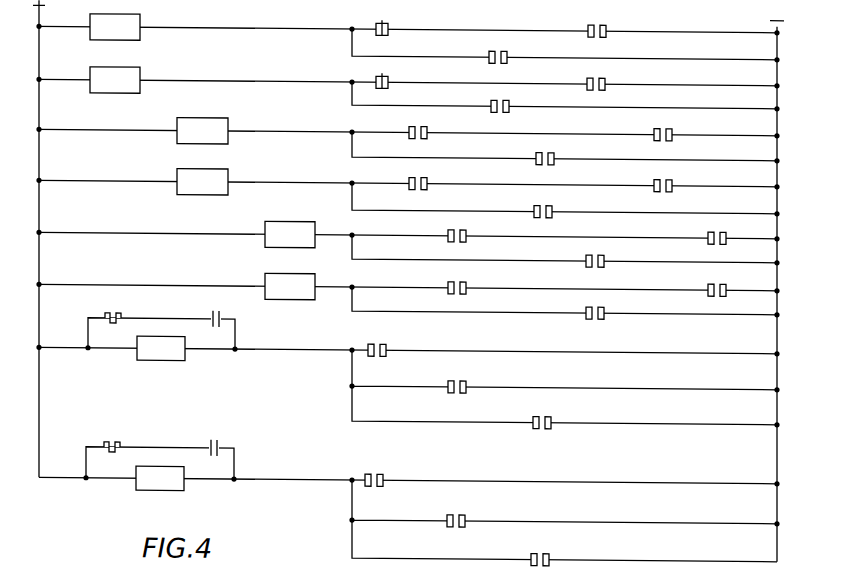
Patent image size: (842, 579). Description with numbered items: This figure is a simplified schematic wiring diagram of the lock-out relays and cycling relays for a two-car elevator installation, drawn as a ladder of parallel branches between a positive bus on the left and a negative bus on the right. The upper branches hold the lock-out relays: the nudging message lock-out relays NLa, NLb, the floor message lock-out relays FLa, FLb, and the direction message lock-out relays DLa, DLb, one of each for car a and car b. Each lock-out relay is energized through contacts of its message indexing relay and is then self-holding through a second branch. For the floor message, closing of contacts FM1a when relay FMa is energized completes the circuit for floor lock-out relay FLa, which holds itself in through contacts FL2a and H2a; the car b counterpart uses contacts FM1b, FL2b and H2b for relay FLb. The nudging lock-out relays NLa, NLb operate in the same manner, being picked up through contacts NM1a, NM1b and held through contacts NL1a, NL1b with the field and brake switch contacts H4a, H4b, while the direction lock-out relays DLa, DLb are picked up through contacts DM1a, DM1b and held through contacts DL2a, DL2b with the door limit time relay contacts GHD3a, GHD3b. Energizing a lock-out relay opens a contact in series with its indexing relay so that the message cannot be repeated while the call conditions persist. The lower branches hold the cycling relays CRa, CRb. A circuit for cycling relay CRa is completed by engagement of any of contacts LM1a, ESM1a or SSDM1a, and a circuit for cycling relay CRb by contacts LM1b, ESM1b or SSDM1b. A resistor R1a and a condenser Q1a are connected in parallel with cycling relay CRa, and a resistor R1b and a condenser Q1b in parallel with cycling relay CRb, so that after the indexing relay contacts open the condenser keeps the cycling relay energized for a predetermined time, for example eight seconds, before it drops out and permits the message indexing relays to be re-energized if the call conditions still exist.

The nudging message lock-out relay NLa is at (115, 27).
The nudging message lock-out relay NLb is at (115, 80).
The floor message lock-out relay FLa is at (202, 131).
The floor message lock-out relay FLb is at (202, 182).
The direction message lock-out relay DLa is at (290, 234).
The direction message lock-out relay DLb is at (290, 286).
The cycling relay CRa is at (161, 348).
The cycling relay CRb is at (160, 478).
The resistor R1a is at (116, 310).
The condenser Q1a is at (220, 312).
The resistor R1b is at (116, 439).
The condenser Q1b is at (219, 441).
The field and brake switch contacts H4a is at (383, 20).
The field and brake switch contacts H4b is at (383, 73).
The nudging message lock-out relay contacts NL1a is at (597, 23).
The nudging message lock-out relay contacts NL1b is at (598, 72).
The nudging message indexing relay contacts NM1a is at (498, 50).
The nudging message indexing relay contacts NM1b is at (502, 95).
The field and brake switch contacts H2a is at (420, 122).
The field and brake switch contacts H2b is at (420, 173).
The floor message lock-out relay contacts FL2a is at (665, 122).
The floor message lock-out relay contacts FL2b is at (665, 173).
The floor message indexing relay contacts FM1a is at (547, 147).
The floor message indexing relay contacts FM1b is at (545, 200).
The door limit time relay contacts GHD3a is at (459, 225).
The door limit time relay contacts GHD3b is at (459, 277).
The direction message lock-out relay contacts DL2a is at (717, 229).
The direction message lock-out relay contacts DL2b is at (717, 281).
The direction message indexing relay contacts DM1a is at (597, 249).
The direction message indexing relay contacts DM1b is at (601, 296).
The lobby message indexing relay contacts LM1a is at (377, 344).
The lobby message indexing relay contacts LM1b is at (374, 474).
The emergency stop message indexing relay contacts ESM1a is at (457, 380).
The emergency stop message indexing relay contacts ESM1b is at (464, 511).
The supplementary safety device message indexing relay contacts SSDM1a is at (547, 405).
The supplementary safety device message indexing relay contacts SSDM1b is at (545, 542).